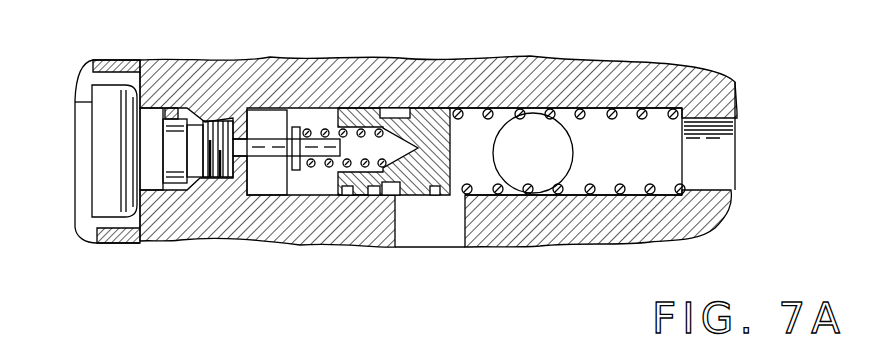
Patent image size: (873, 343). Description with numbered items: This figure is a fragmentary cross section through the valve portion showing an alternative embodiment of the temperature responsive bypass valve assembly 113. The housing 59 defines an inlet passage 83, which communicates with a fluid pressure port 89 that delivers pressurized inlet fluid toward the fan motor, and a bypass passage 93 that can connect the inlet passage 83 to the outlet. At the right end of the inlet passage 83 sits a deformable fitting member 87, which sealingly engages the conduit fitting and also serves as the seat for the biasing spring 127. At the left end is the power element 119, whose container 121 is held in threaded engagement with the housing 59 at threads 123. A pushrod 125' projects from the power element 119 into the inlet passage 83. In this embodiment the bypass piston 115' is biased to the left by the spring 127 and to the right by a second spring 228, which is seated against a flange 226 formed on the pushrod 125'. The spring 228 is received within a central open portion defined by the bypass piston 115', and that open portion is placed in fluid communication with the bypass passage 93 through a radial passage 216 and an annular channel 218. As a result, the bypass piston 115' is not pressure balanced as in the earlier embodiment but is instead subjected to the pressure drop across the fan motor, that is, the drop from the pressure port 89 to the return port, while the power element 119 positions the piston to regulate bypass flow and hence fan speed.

The housing 59 is at (720, 83).
The inlet passage 83 is at (562, 113).
The deformable fitting member 87 is at (718, 134).
The fluid pressure port 89 is at (533, 153).
The bypass passage 93 is at (462, 210).
The temperature responsive bypass valve assembly 113 is at (265, 101).
The bypass piston 115' is at (414, 76).
The power element 119 is at (167, 106).
The container 121 is at (86, 172).
The threads 123 is at (212, 183).
The pushrod 125' is at (286, 169).
The biasing spring 127 is at (625, 110).
The radial passage 216 is at (393, 120).
The annular channel 218 is at (390, 184).
The flange 226 is at (299, 127).
The spring 228 is at (330, 130).